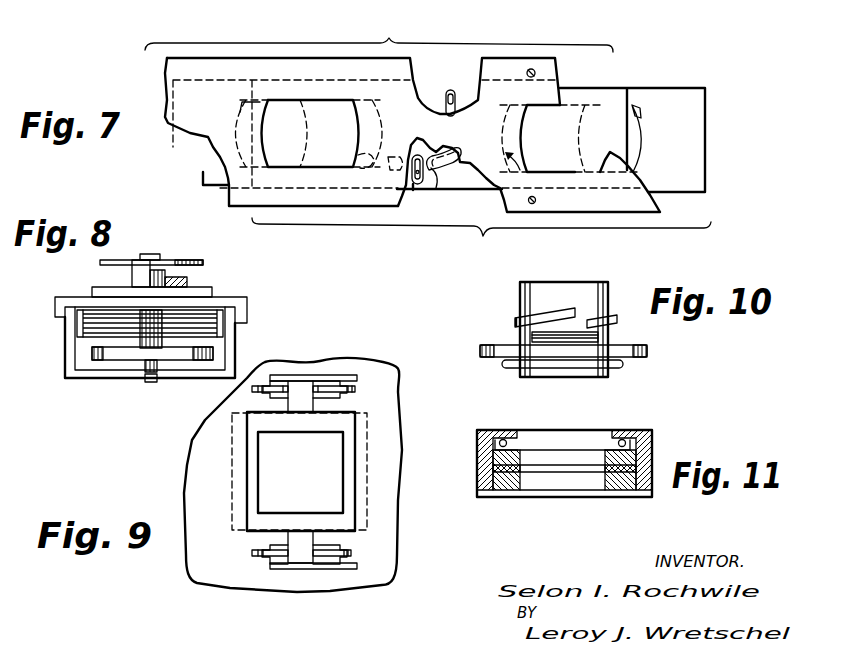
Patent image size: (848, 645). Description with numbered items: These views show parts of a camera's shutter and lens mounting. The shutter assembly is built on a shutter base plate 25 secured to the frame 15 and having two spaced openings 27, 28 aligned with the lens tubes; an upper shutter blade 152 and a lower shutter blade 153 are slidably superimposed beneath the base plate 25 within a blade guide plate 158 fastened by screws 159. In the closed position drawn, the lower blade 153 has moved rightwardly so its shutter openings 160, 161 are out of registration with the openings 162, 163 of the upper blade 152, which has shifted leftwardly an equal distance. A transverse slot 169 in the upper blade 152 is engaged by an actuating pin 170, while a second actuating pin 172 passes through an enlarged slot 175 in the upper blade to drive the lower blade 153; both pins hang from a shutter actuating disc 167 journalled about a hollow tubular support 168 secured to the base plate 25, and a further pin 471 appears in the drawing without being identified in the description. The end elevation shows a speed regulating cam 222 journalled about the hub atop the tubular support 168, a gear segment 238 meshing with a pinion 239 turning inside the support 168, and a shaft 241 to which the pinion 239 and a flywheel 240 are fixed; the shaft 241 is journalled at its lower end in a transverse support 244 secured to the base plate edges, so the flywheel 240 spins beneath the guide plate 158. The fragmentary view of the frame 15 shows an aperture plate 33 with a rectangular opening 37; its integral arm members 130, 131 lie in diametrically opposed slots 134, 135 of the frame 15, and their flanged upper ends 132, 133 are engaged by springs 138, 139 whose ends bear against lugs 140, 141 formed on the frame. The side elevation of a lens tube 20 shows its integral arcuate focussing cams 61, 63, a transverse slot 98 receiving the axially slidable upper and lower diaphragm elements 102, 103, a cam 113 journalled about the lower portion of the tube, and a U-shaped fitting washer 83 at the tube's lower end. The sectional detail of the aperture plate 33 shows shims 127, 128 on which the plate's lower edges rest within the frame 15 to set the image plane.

In FIG. 7, the shutter base plate 25 is at (263, 62).
In FIG. 8, the shutter base plate 25 is at (58, 302).
In FIG. 7, the lower shutter blade 153 is at (287, 115).
In FIG. 8, the lower shutter blade 153 is at (83, 329).
In FIG. 7, the opening 27 is at (345, 142).
In FIG. 7, the opening 28 is at (543, 107).
In FIG. 7, the shutter opening 161 is at (638, 114).
In FIG. 7, the screws 159 is at (540, 73).
In FIG. 8, the screws 159 is at (247, 326).
In FIG. 7, the opening 162 is at (240, 110).
In FIG. 7, the upper shutter blade 152 is at (208, 173).
In FIG. 8, the upper shutter blade 152 is at (83, 317).
In FIG. 7, the shutter opening 160 is at (355, 158).
In FIG. 7, the pin 471 is at (417, 186).
In FIG. 7, the actuating pin 170 is at (451, 92).
In FIG. 7, the transverse slot 169 is at (443, 97).
In FIG. 7, the enlarged slot 175 is at (452, 164).
In FIG. 7, the actuating pin 172 is at (437, 190).
In FIG. 7, the opening 163 is at (520, 175).
In FIG. 8, the speed regulating cam 222 is at (100, 262).
In FIG. 8, the hollow tubular support 168 is at (132, 275).
In FIG. 8, the pinion 239 is at (162, 272).
In FIG. 8, the gear segment 238 is at (189, 283).
In FIG. 8, the shutter actuating disc 167 is at (92, 292).
In FIG. 8, the transverse support 244 is at (72, 376).
In FIG. 8, the blade guide plate 158 is at (84, 345).
In FIG. 8, the shaft 241 is at (147, 364).
In FIG. 8, the flywheel 240 is at (101, 357).
In FIG. 9, the frame 15 is at (198, 473).
In FIG. 11, the frame 15 is at (601, 456).
In FIG. 9, the aperture plate 33 is at (238, 457).
In FIG. 11, the aperture plate 33 is at (500, 492).
In FIG. 9, the opening 37 is at (263, 444).
In FIG. 11, the opening 37 is at (520, 482).
In FIG. 9, the slot 134 is at (296, 370).
In FIG. 9, the flanged upper end 132 is at (303, 388).
In FIG. 11, the flanged upper end 132 is at (505, 438).
In FIG. 9, the spring 138 is at (351, 389).
In FIG. 11, the spring 138 is at (510, 447).
In FIG. 9, the lug 140 is at (258, 398).
In FIG. 9, the lug 141 is at (340, 396).
In FIG. 9, the flanged upper end 133 is at (301, 550).
In FIG. 11, the flanged upper end 133 is at (623, 438).
In FIG. 9, the spring 139 is at (250, 552).
In FIG. 11, the spring 139 is at (603, 447).
In FIG. 9, the slot 135 is at (302, 568).
In FIG. 10, the lens tube 20 is at (577, 292).
In FIG. 10, the cam 63 is at (513, 320).
In FIG. 10, the cam 61 is at (607, 320).
In FIG. 10, the transverse slot 98 is at (605, 338).
In FIG. 10, the upper diaphragm element 102 is at (520, 332).
In FIG. 10, the lower diaphragm element 103 is at (520, 338).
In FIG. 10, the cam 113 is at (648, 350).
In FIG. 10, the U-shaped fitting washer 83 is at (503, 363).
In FIG. 11, the arm member 130 is at (485, 456).
In FIG. 11, the arm member 131 is at (640, 460).
In FIG. 11, the shim 127 is at (508, 468).
In FIG. 11, the shim 128 is at (607, 470).